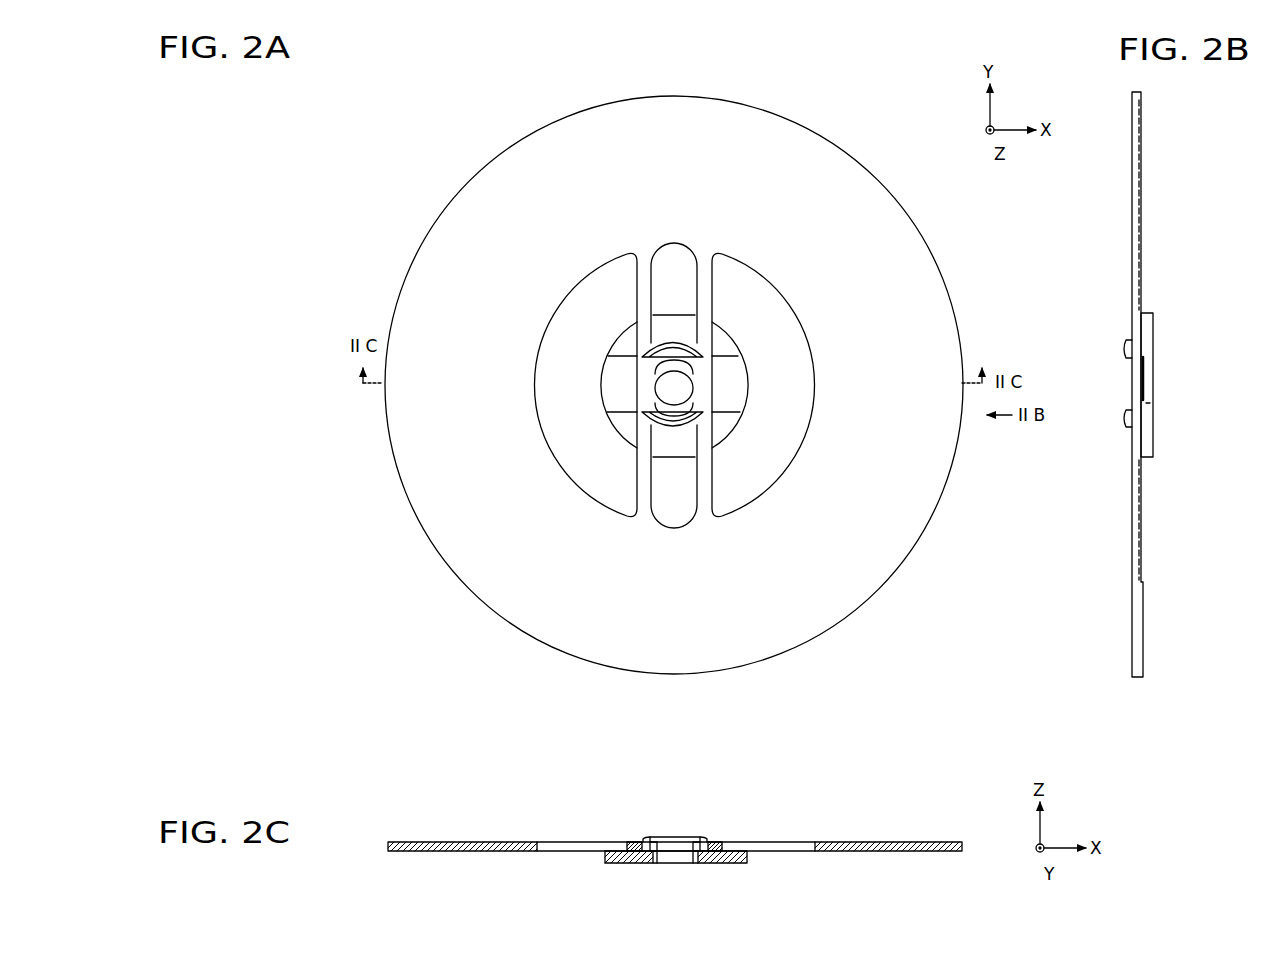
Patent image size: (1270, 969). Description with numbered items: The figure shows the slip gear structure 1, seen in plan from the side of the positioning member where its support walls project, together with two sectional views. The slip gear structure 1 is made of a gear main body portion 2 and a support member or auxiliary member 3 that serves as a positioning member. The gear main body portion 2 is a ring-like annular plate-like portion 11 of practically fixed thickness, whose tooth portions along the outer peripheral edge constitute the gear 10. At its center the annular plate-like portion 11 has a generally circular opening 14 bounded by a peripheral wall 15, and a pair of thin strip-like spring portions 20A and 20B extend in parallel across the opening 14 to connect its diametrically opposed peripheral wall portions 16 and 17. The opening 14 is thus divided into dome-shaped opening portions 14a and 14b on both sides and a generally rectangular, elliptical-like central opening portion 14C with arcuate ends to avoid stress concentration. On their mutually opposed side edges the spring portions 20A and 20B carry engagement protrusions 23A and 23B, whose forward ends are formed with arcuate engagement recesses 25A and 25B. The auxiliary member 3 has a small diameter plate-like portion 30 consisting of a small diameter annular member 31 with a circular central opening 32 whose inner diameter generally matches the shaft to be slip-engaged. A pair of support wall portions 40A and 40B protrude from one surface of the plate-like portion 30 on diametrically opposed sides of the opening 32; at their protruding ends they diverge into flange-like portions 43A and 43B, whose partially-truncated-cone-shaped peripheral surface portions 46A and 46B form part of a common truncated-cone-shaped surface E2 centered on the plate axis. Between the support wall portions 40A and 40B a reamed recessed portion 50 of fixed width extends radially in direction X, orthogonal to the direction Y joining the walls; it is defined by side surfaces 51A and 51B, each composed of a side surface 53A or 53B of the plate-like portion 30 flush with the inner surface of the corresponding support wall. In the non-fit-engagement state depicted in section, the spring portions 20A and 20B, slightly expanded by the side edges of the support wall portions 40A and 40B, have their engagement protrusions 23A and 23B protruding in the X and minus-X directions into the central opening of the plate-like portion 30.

In FIG. 2A, the slip gear structure 1 is at (380, 539).
In FIG. 2B, the slip gear structure 1 is at (1168, 149).
In FIG. 2C, the slip gear structure 1 is at (933, 776).
In FIG. 2A, the gear main body portion 2 is at (747, 140).
In FIG. 2B, the gear main body portion 2 is at (1141, 186).
In FIG. 2C, the gear main body portion 2 is at (860, 842).
In FIG. 2A, the support member or auxiliary member 3 is at (727, 331).
In FIG. 2B, the support member or auxiliary member 3 is at (1147, 323).
In FIG. 2C, the support member or auxiliary member 3 is at (690, 837).
In FIG. 2A, the gear 10 is at (850, 155).
In FIG. 2B, the gear 10 is at (1138, 115).
In FIG. 2C, the gear 10 is at (388, 845).
In FIG. 2A, the annular plate-like portion 11 is at (893, 270).
In FIG. 2B, the annular plate-like portion 11 is at (1141, 250).
In FIG. 2C, the annular plate-like portion 11 is at (933, 842).
In FIG. 2A, the opening 14 is at (553, 440).
In FIG. 2A, the dome-shaped opening portion 14a is at (647, 418).
In FIG. 2C, the dome-shaped opening portion 14a is at (543, 842).
In FIG. 2A, the dome-shaped opening portion 14b is at (760, 478).
In FIG. 2C, the dome-shaped opening portion 14b is at (803, 842).
In FIG. 2A, the central opening portion 14C is at (645, 428).
In FIG. 2A, the peripheral wall 15 is at (980, 520).
In FIG. 2A, the peripheral wall portion 16 is at (680, 233).
In FIG. 2A, the peripheral wall portion 17 is at (683, 542).
In FIG. 2A, the spring portion 20A is at (637, 287).
In FIG. 2C, the spring portion 20A is at (640, 842).
In FIG. 2A, the spring portion 20B is at (713, 338).
In FIG. 2C, the spring portion 20B is at (707, 842).
In FIG. 2A, the engagement protrusion 23A is at (625, 394).
In FIG. 2C, the engagement protrusion 23A is at (647, 840).
In FIG. 2A, the engagement protrusion 23B is at (716, 410).
In FIG. 2C, the engagement protrusion 23B is at (723, 843).
In FIG. 2A, the arcuate engagement recess 25A is at (637, 380).
In FIG. 2A, the arcuate engagement recess 25B is at (697, 388).
In FIG. 2A, the small diameter plate-like portion 30 is at (713, 357).
In FIG. 2B, the small diameter plate-like portion 30 is at (1148, 375).
In FIG. 2C, the small diameter plate-like portion 30 is at (720, 863).
In FIG. 2A, the small diameter annular member 31 is at (713, 366).
In FIG. 2B, the small diameter annular member 31 is at (1147, 403).
In FIG. 2A, the circular central opening 32 is at (660, 342).
In FIG. 2C, the circular central opening 32 is at (688, 863).
In FIG. 2A, the support wall portion 40A is at (700, 428).
In FIG. 2B, the support wall portion 40A is at (1126, 415).
In FIG. 2A, the support wall portion 40B is at (696, 342).
In FIG. 2B, the support wall portion 40B is at (1126, 350).
In FIG. 2A, the flange-like portion 43A is at (645, 418).
In FIG. 2A, the flange-like portion 43B is at (713, 287).
In FIG. 2A, the partially-truncated-cone-shaped peripheral surface portion 46A is at (562, 450).
In FIG. 2A, the partially-truncated-cone-shaped peripheral surface portion 46B is at (707, 315).
In FIG. 2A, the reamed recessed portion 50 is at (617, 406).
In FIG. 2C, the reamed recessed portion 50 is at (618, 842).
In FIG. 2A, the side surface 51A is at (750, 396).
In FIG. 2A, the side surface 51B is at (603, 362).
In FIG. 2A, the side surface 53A is at (718, 415).
In FIG. 2A, the side surface 53B is at (637, 327).
In FIG. 2A, the truncated-cone-shaped surface E2 is at (760, 470).